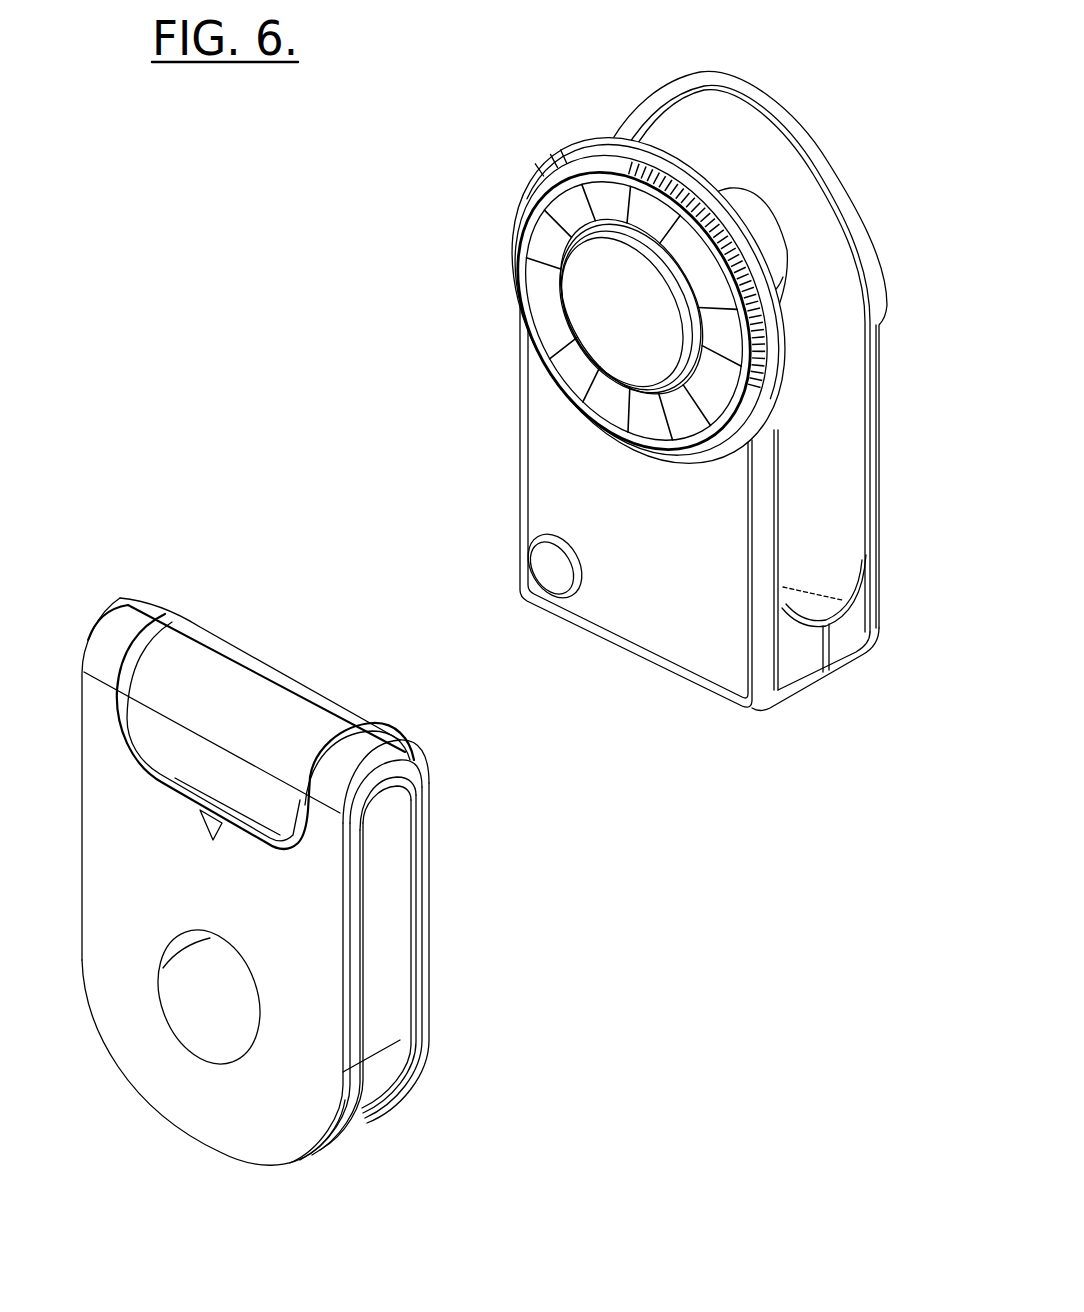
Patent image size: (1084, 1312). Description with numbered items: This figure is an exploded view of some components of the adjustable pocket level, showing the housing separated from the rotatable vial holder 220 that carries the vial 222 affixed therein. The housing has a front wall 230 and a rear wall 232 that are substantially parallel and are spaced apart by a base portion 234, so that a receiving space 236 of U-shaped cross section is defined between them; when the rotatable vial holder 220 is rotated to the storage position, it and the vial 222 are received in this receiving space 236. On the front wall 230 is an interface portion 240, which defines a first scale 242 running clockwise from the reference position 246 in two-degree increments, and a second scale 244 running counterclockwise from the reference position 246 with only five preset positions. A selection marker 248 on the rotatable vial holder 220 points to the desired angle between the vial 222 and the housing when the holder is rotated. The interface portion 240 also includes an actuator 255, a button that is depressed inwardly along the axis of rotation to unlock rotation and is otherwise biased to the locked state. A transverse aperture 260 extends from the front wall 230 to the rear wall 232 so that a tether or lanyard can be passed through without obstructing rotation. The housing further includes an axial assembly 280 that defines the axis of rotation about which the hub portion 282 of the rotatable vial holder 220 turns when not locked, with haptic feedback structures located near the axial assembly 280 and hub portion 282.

The rotatable vial holder 220 is at (313, 881).
The vial 222 is at (231, 690).
The front wall 230 is at (715, 417).
The rear wall 232 is at (833, 412).
The base portion 234 is at (808, 647).
The receiving space 236 is at (826, 538).
The interface portion 240 is at (623, 271).
The first scale 242 is at (703, 206).
The second scale 244 is at (503, 204).
The reference position 246 is at (627, 177).
The selection marker 248 is at (214, 816).
The actuator 255 is at (623, 312).
The transverse aperture 260 is at (552, 580).
The axial assembly 280 is at (752, 232).
The hub portion 282 is at (196, 1013).